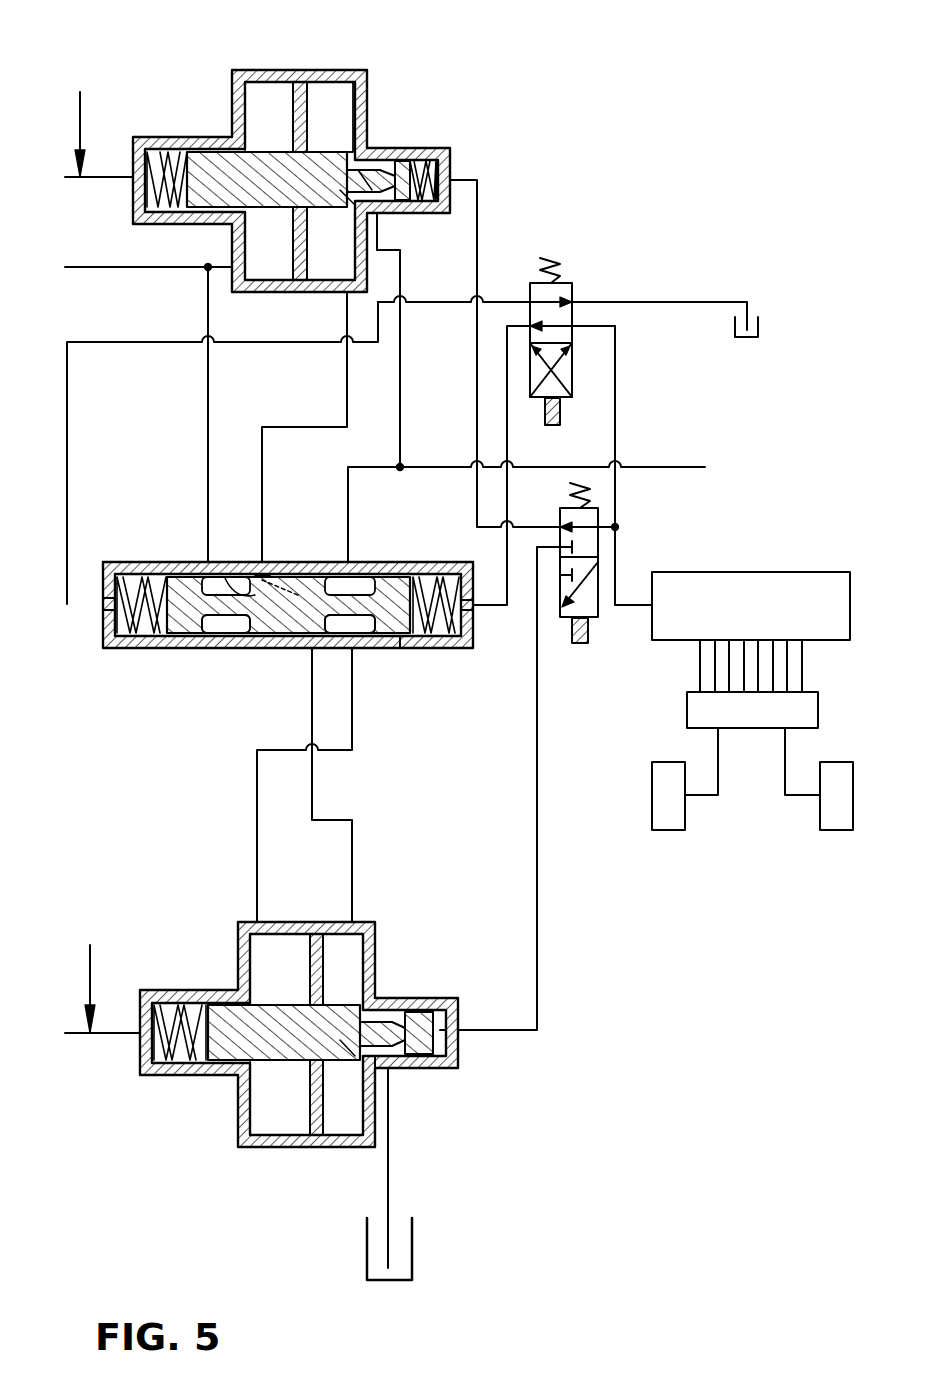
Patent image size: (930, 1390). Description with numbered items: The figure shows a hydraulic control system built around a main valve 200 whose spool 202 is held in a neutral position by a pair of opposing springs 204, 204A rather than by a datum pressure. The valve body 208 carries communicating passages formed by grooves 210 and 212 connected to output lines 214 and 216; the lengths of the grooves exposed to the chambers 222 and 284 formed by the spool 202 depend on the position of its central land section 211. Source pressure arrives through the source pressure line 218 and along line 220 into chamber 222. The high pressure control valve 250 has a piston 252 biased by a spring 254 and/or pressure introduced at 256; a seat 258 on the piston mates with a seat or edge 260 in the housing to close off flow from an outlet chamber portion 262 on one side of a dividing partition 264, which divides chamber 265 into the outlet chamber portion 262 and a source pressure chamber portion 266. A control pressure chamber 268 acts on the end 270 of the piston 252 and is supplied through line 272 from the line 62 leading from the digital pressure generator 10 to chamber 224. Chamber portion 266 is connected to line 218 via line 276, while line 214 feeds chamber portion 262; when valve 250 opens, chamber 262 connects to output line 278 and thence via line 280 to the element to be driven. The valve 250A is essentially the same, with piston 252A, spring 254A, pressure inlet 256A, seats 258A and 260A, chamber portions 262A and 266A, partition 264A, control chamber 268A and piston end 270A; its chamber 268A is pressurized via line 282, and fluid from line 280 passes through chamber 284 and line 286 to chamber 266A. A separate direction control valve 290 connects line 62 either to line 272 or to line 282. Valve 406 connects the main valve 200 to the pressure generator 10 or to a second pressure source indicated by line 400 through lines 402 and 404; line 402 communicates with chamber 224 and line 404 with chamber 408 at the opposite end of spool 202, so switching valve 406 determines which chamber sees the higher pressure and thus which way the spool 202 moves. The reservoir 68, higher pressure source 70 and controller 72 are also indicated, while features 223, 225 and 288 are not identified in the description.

The digital pressure generator 10 is at (766, 570).
The line 62 is at (618, 566).
The reservoir 68 is at (650, 808).
The higher pressure source 70 is at (818, 822).
The controller 72 is at (672, 714).
The main valve 200 is at (396, 562).
The spool 202 is at (410, 650).
The spring 204 is at (132, 562).
The spring 204A is at (436, 562).
The valve body 208 is at (282, 562).
The groove 210 is at (244, 562).
The central land section 211 is at (318, 562).
The groove 212 is at (288, 650).
The output line 214 is at (300, 425).
The output line 216 is at (314, 786).
The source pressure line 218 is at (140, 270).
The line 220 is at (208, 382).
The chamber 222 is at (220, 650).
The port 223 is at (478, 636).
The chamber 224 is at (470, 650).
The port 225 is at (422, 650).
The high pressure control valve 250 is at (336, 86).
The control valve 250A is at (373, 930).
The piston 252 is at (222, 150).
The piston 252A is at (225, 1000).
The spring 254 is at (170, 150).
The spring 254A is at (190, 1075).
The pressure inlet 256 is at (106, 180).
The pressure inlet 256A is at (86, 1040).
The seat 258 is at (355, 160).
The seat 258A is at (380, 1080).
The seat 260 is at (360, 170).
The seat 260A is at (340, 975).
The outlet chamber portion 262 is at (360, 76).
The outlet chamber portion 262A is at (368, 950).
The dividing partition 264 is at (326, 92).
The dividing partition 264A is at (300, 950).
The chamber 265 is at (318, 98).
The source pressure chamber portion 266 is at (270, 92).
The pressure chamber 266A is at (280, 1110).
The control pressure chamber 268 is at (446, 152).
The control pressure chamber 268A is at (450, 1042).
The piston end 270 is at (436, 150).
The piston end 270A is at (440, 1012).
The line 272 is at (458, 178).
The line 276 is at (222, 262).
The output line 278 is at (402, 390).
The line 280 is at (640, 466).
The line 282 is at (540, 752).
The chamber 284 is at (362, 650).
The line 286 is at (255, 780).
The reservoir 288 is at (414, 1252).
The direction control valve 290 is at (600, 615).
The line 400 is at (78, 100).
The line 402 is at (510, 448).
The line 404 is at (436, 304).
The valve 406 is at (530, 292).
The chamber 408 is at (126, 650).